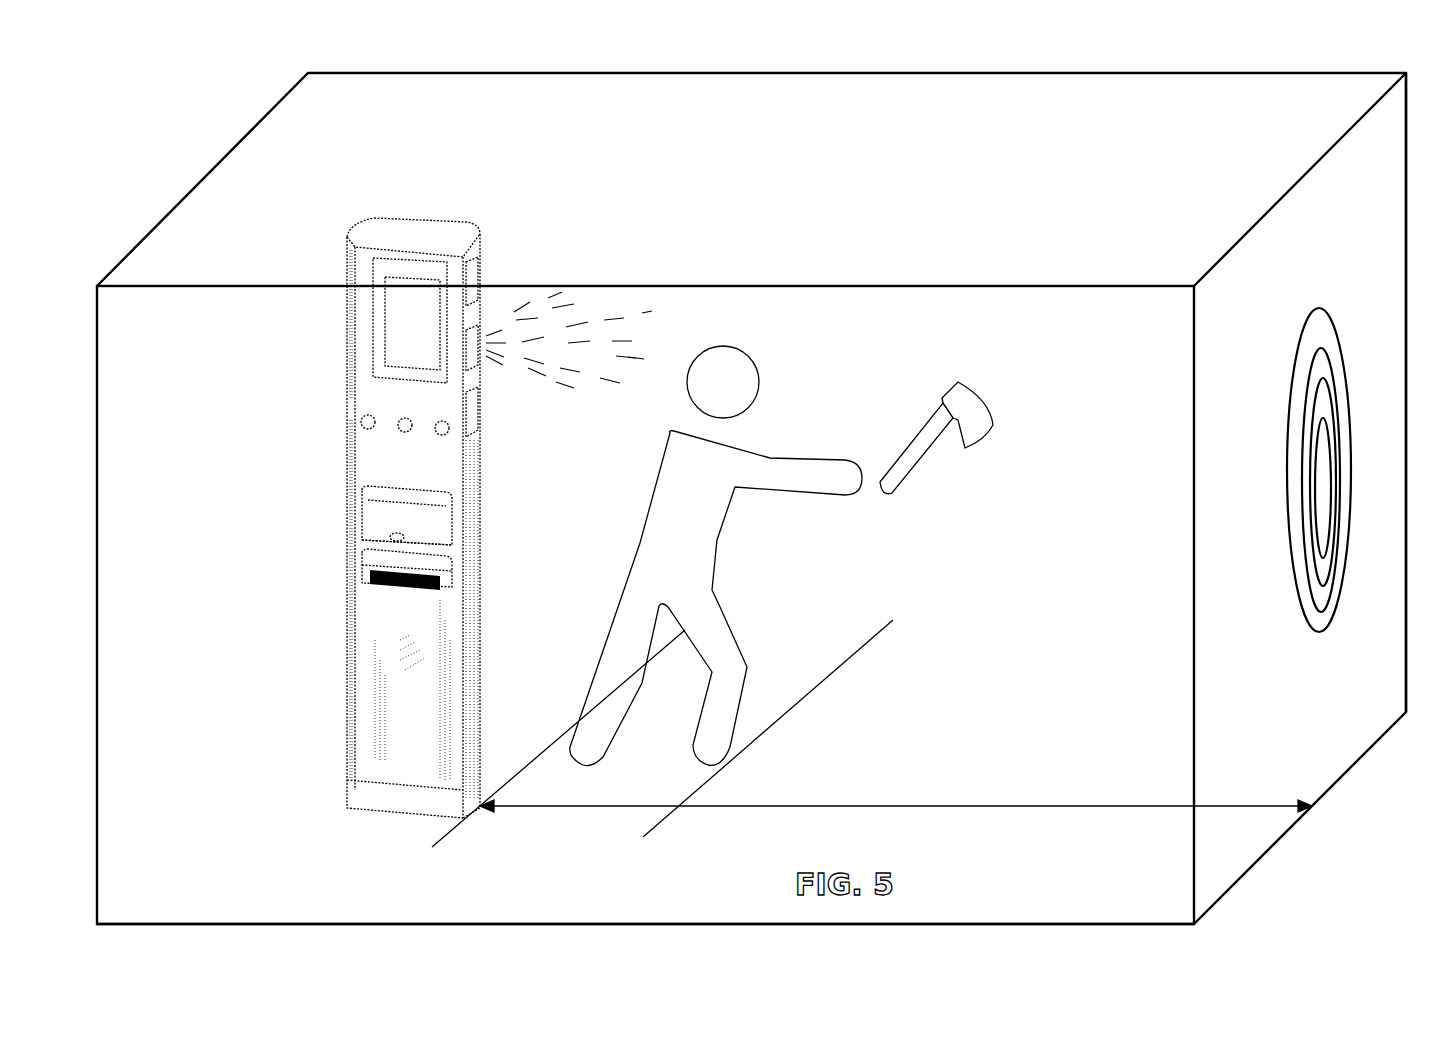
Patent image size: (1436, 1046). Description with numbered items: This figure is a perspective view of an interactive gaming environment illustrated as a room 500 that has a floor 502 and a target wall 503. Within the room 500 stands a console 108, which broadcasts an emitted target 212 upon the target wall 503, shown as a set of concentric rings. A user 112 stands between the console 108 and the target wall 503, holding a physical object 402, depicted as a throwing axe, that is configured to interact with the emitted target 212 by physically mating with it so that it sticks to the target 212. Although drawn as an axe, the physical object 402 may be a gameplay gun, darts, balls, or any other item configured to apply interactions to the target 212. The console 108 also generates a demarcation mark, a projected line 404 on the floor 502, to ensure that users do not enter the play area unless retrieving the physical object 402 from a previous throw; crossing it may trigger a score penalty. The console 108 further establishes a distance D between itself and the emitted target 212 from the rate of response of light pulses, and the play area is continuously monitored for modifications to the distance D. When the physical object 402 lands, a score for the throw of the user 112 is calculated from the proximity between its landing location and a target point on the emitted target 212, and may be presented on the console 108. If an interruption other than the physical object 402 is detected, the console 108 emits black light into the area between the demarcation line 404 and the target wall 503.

The room 500 is at (912, 161).
The target wall 503 is at (1374, 243).
The floor 502 is at (1043, 764).
The console 108 is at (347, 308).
The user 112 is at (720, 550).
The physical object 402 is at (915, 437).
The demarcation mark 404 is at (762, 738).
The emitted target 212 is at (1337, 603).
The distance D is at (896, 792).